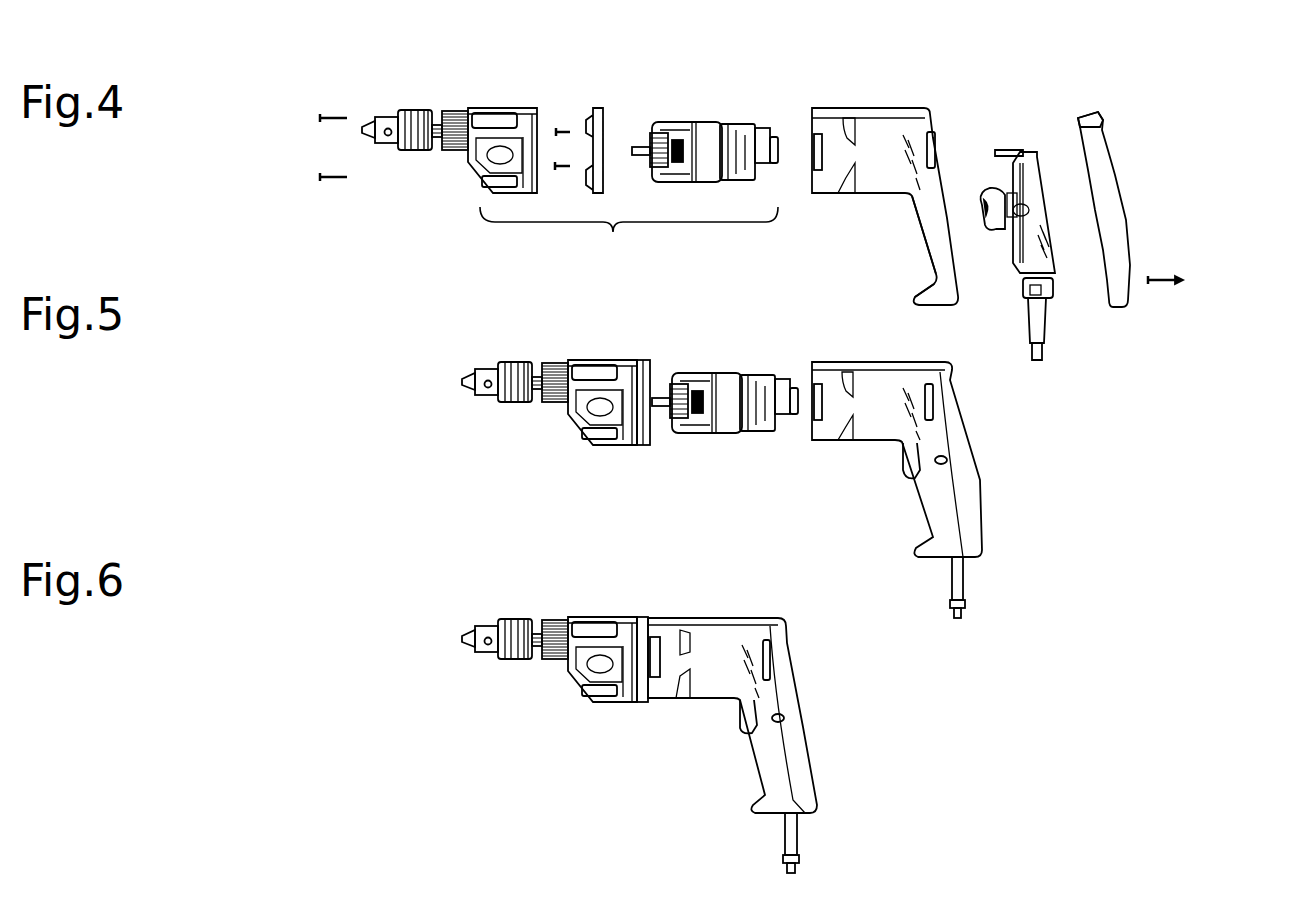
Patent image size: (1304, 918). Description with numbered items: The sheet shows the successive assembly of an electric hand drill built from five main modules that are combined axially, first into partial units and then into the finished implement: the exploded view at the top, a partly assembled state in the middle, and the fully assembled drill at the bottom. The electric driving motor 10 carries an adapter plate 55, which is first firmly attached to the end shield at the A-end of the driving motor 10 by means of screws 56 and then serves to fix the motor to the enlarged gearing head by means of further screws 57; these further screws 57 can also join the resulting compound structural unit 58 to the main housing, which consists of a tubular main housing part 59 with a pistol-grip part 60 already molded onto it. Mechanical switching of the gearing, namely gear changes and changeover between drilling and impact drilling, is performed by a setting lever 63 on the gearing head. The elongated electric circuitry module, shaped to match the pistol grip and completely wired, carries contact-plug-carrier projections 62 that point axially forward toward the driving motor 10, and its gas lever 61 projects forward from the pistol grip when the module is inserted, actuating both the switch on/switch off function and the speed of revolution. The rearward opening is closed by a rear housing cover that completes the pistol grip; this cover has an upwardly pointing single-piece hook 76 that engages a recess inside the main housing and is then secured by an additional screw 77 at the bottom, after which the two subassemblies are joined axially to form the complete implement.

The electric driving motor 10 is at (702, 120).
The adapter plate 55 is at (597, 108).
The screws 56 is at (566, 162).
The further screws 57 is at (326, 123).
The compound structural unit (subassembly) 58 is at (629, 241).
The tubular main housing part 59 is at (865, 176).
The pistol-grip part 60 is at (933, 230).
The gas lever 61 is at (989, 232).
The contact-plug-carrier projections 62 is at (998, 151).
The setting lever 63 is at (482, 172).
The hook 76 is at (1076, 117).
The screw 77 is at (1162, 288).